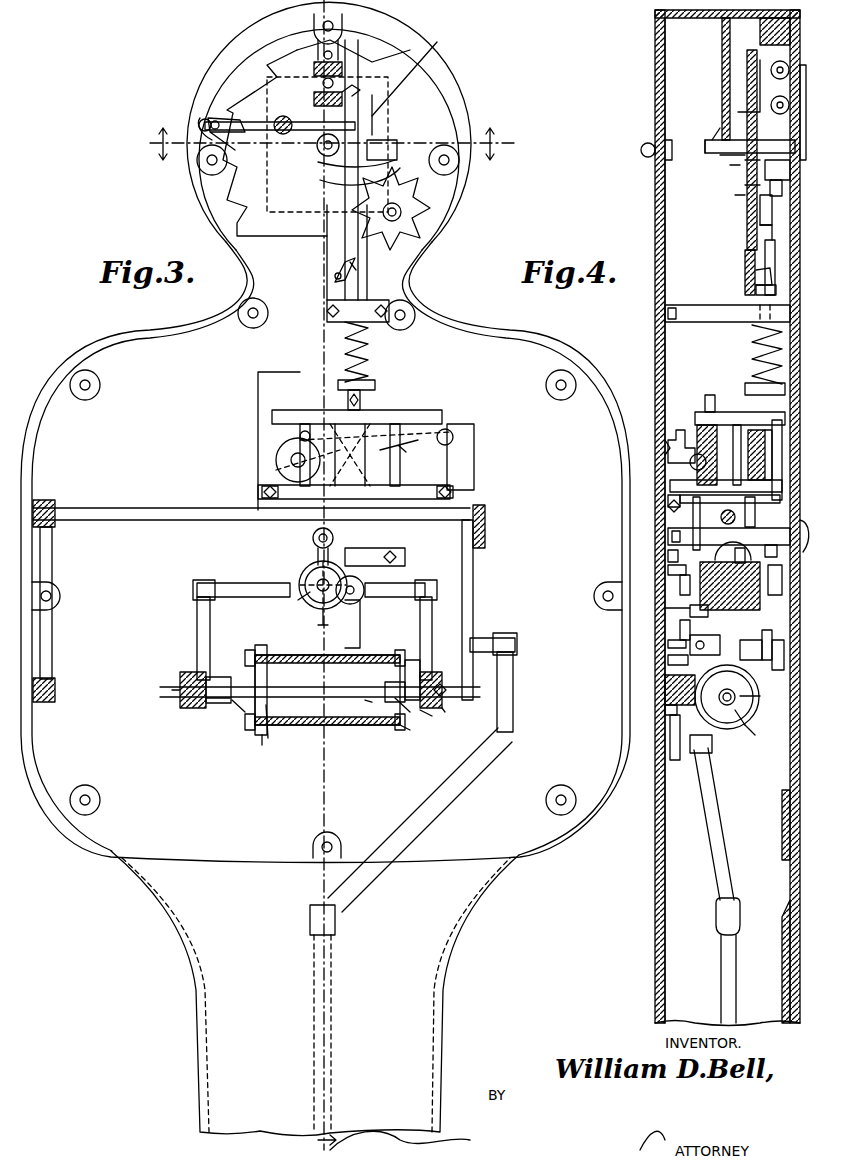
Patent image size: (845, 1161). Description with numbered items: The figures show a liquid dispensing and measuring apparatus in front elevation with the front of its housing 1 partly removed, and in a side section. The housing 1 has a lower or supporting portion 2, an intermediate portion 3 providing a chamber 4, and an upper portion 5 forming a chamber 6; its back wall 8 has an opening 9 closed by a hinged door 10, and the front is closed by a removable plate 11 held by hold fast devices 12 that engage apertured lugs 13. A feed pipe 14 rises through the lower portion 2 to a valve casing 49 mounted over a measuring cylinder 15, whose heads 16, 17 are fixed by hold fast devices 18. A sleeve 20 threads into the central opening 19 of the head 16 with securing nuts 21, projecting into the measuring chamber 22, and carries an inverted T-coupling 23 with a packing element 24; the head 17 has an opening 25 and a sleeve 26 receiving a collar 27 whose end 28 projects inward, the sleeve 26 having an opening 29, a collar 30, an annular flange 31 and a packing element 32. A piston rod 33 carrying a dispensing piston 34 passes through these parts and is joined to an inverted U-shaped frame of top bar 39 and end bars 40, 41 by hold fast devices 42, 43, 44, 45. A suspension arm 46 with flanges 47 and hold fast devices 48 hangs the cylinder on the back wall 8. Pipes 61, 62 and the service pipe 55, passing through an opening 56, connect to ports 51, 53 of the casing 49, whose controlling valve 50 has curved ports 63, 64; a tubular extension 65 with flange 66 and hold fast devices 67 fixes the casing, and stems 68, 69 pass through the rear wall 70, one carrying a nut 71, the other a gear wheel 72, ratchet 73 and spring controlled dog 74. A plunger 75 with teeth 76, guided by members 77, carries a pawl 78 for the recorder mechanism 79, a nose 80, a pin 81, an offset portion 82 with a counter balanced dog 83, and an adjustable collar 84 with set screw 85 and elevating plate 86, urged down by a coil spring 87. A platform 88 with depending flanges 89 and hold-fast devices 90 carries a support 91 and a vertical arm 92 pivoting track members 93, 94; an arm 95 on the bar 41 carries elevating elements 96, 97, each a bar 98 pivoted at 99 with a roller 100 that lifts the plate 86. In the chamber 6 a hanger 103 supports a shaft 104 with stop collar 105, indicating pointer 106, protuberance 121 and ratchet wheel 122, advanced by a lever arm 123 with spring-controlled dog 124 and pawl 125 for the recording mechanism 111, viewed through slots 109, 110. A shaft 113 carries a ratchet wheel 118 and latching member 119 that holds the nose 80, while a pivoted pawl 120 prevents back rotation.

In FIG. 3, the housing 1 is at (618, 401).
In FIG. 3, the lower or supporting portion 2 is at (445, 1037).
In FIG. 3, the intermediate portion 3 is at (58, 388).
In FIG. 3, the chamber 4 is at (270, 15).
In FIG. 3, the upper portion 5 is at (476, 88).
In FIG. 4, the upper portion 5 is at (655, 48).
In FIG. 3, the chamber 6 is at (327, 94).
In FIG. 4, the back wall 8 is at (665, 708).
In FIG. 4, the opening 9 is at (655, 230).
In FIG. 4, the hinged door 10 is at (662, 176).
In FIG. 4, the removable plate 11 is at (765, 240).
In FIG. 4, the hold fast devices 12 is at (772, 26).
In FIG. 3, the apertured lugs 13 is at (102, 392).
In FIG. 3, the feed pipe 14 is at (472, 764).
In FIG. 4, the feed pipe 14 is at (716, 830).
In FIG. 3, the measuring cylinder 15 is at (358, 730).
In FIG. 4, the measuring cylinder 15 is at (738, 700).
In FIG. 3, the head 16 is at (245, 716).
In FIG. 3, the head 17 is at (408, 726).
In FIG. 4, the head 17 is at (756, 738).
In FIG. 3, the hold fast devices 18 is at (255, 652).
In FIG. 3, the central opening 19 is at (264, 668).
In FIG. 3, the sleeve 20 is at (228, 702).
In FIG. 3, the securing nuts 21 is at (238, 660).
In FIG. 3, the measuring chamber 22 is at (248, 730).
In FIG. 3, the inverted T-coupling 23 is at (192, 678).
In FIG. 3, the packing element 24 is at (182, 700).
In FIG. 3, the opening 25 is at (396, 686).
In FIG. 3, the sleeve 26 is at (438, 684).
In FIG. 3, the collar 27 is at (400, 702).
In FIG. 4, the collar 27 is at (730, 715).
In FIG. 3, the collar end 28 is at (368, 702).
In FIG. 3, the opening 29 is at (440, 680).
In FIG. 3, the collar 30 is at (412, 660).
In FIG. 3, the annular flange 31 is at (428, 715).
In FIG. 4, the annular flange 31 is at (762, 705).
In FIG. 3, the packing element 32 is at (446, 710).
In FIG. 3, the piston rod 33 is at (300, 700).
In FIG. 3, the dispensing piston 34 is at (268, 740).
In FIG. 3, the top bar 39 is at (196, 518).
In FIG. 4, the top bar 39 is at (706, 522).
In FIG. 3, the end bar 40 is at (55, 650).
In FIG. 3, the end bar 41 is at (470, 592).
In FIG. 3, the hold fast device 42 is at (42, 505).
In FIG. 3, the hold fast device 43 is at (485, 522).
In FIG. 3, the hold fast device 44 is at (55, 688).
In FIG. 3, the hold fast device 45 is at (515, 690).
In FIG. 4, the suspension arm 46 is at (704, 742).
In FIG. 4, the flanges 47 is at (676, 748).
In FIG. 4, the hold fast devices 48 is at (665, 690).
In FIG. 4, the valve casing 49 is at (720, 518).
In FIG. 4, the controlling valve 50 is at (705, 639).
In FIG. 4, the port 51 is at (745, 552).
In FIG. 4, the port 53 is at (751, 650).
In FIG. 3, the service pipe 55 is at (313, 538).
In FIG. 4, the service pipe 55 is at (755, 540).
In FIG. 4, the opening 56 is at (800, 525).
In FIG. 3, the combined supply and dispensing pipe 61 is at (388, 590).
In FIG. 4, the combined supply and dispensing pipe 61 is at (668, 555).
In FIG. 3, the combined supply and dispensing pipe 62 is at (255, 583).
In FIG. 4, the curved port 63 is at (776, 552).
In FIG. 4, the curved port 64 is at (738, 610).
In FIG. 4, the tubular extension 65 is at (680, 585).
In FIG. 4, the flange 66 is at (668, 570).
In FIG. 4, the hold fast devices 67 is at (668, 660).
In FIG. 4, the stem 68 is at (716, 552).
In FIG. 3, the stem 69 is at (298, 598).
In FIG. 4, the stem 69 is at (775, 645).
In FIG. 4, the rear wall 70 is at (690, 611).
In FIG. 4, the stop member or nut 71 is at (668, 608).
In FIG. 3, the gear wheel 72 is at (305, 580).
In FIG. 4, the gear wheel 72 is at (774, 655).
In FIG. 3, the ratchet 73 is at (318, 618).
In FIG. 3, the spring controlled dog 74 is at (358, 582).
In FIG. 4, the spring controlled dog 74 is at (778, 578).
In FIG. 3, the plunger 75 is at (380, 560).
In FIG. 4, the plunger 75 is at (752, 252).
In FIG. 3, the teeth 76 is at (355, 625).
In FIG. 4, the teeth 76 is at (727, 697).
In FIG. 3, the combined guide and retaining members 77 is at (370, 312).
In FIG. 4, the combined guide and retaining members 77 is at (728, 315).
In FIG. 3, the dog or pawl 78 is at (346, 82).
In FIG. 4, the dog or pawl 78 is at (775, 95).
In FIG. 3, the recorder mechanism 79 is at (340, 58).
In FIG. 4, the recorder mechanism 79 is at (778, 62).
In FIG. 3, the inverted L-shaped nose 80 is at (392, 142).
In FIG. 4, the inverted L-shaped nose 80 is at (770, 190).
In FIG. 3, the pin 81 is at (375, 118).
In FIG. 4, the pin 81 is at (766, 165).
In FIG. 3, the offset portion 82 is at (334, 272).
In FIG. 4, the offset portion 82 is at (756, 278).
In FIG. 3, the counter balanced dog 83 is at (360, 268).
In FIG. 4, the counter balanced dog 83 is at (760, 290).
In FIG. 3, the collar 84 is at (376, 392).
In FIG. 4, the collar 84 is at (745, 390).
In FIG. 3, the set screw 85 is at (346, 398).
In FIG. 4, the set screw 85 is at (760, 412).
In FIG. 3, the elevating plate 86 is at (410, 418).
In FIG. 4, the elevating plate 86 is at (710, 396).
In FIG. 3, the coil spring 87 is at (372, 370).
In FIG. 4, the coil spring 87 is at (760, 346).
In FIG. 3, the platform 88 is at (430, 488).
In FIG. 4, the platform 88 is at (700, 488).
In FIG. 3, the depending flanges 89 is at (262, 493).
In FIG. 4, the depending flanges 89 is at (668, 508).
In FIG. 3, the hold-fast devices 90 is at (262, 492).
In FIG. 4, the hold-fast devices 90 is at (668, 500).
In FIG. 3, the support 91 is at (300, 438).
In FIG. 4, the support 91 is at (680, 430).
In FIG. 3, the vertical arm 92 is at (400, 470).
In FIG. 4, the vertical arm 92 is at (665, 447).
In FIG. 3, the track member 93 is at (335, 452).
In FIG. 3, the track member 94 is at (348, 470).
In FIG. 3, the laterally extending arm 95 is at (452, 430).
In FIG. 4, the laterally extending arm 95 is at (738, 440).
In FIG. 4, the elevating element 96 is at (698, 462).
In FIG. 3, the elevating element 97 is at (422, 440).
In FIG. 4, the elevating element 97 is at (752, 458).
In FIG. 3, the bar 98 is at (420, 445).
In FIG. 3, the pivot 99 is at (474, 438).
In FIG. 3, the roller 100 is at (290, 460).
In FIG. 3, the hanger 103 is at (316, 43).
In FIG. 4, the hanger 103 is at (722, 77).
In FIG. 3, the shaft 104 is at (320, 133).
In FIG. 4, the shaft 104 is at (708, 147).
In FIG. 4, the stop collar 105 is at (718, 134).
In FIG. 4, the indicating pointer 106 is at (760, 205).
In FIG. 4, the slot 109 is at (745, 110).
In FIG. 4, the slot 110 is at (748, 162).
In FIG. 3, the recording mechanism 111 is at (314, 100).
In FIG. 4, the recording mechanism 111 is at (718, 155).
In FIG. 3, the shaft 113 is at (402, 212).
In FIG. 3, the ratchet wheel 118 is at (416, 228).
In FIG. 4, the ratchet wheel 118 is at (760, 225).
In FIG. 3, the latching member 119 is at (342, 186).
In FIG. 4, the latching member 119 is at (735, 195).
In FIG. 3, the pivoted pawl 120 is at (332, 172).
In FIG. 4, the pivoted pawl 120 is at (745, 185).
In FIG. 3, the protuberance 121 is at (318, 155).
In FIG. 3, the ratchet wheel 122 is at (300, 236).
In FIG. 4, the ratchet wheel 122 is at (745, 255).
In FIG. 3, the lever arm 123 is at (250, 125).
In FIG. 4, the lever arm 123 is at (706, 154).
In FIG. 3, the spring-controlled dog 124 is at (200, 122).
In FIG. 3, the pawl 125 is at (360, 92).
In FIG. 4, the pawl 125 is at (730, 165).